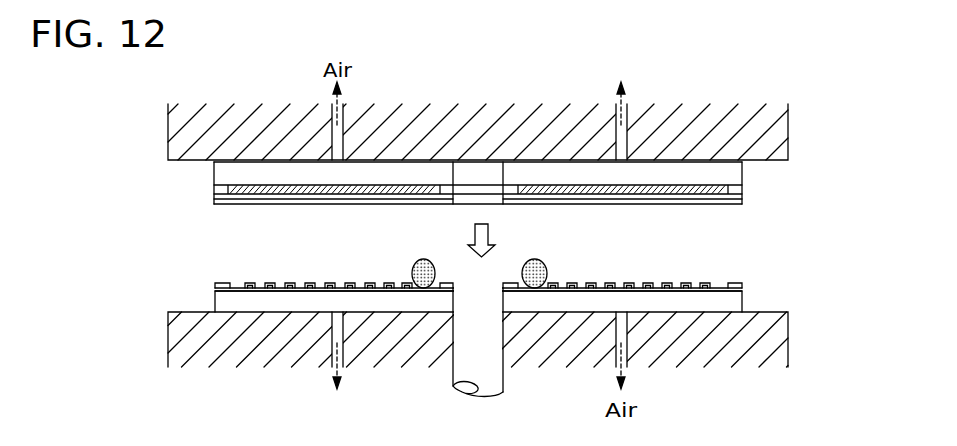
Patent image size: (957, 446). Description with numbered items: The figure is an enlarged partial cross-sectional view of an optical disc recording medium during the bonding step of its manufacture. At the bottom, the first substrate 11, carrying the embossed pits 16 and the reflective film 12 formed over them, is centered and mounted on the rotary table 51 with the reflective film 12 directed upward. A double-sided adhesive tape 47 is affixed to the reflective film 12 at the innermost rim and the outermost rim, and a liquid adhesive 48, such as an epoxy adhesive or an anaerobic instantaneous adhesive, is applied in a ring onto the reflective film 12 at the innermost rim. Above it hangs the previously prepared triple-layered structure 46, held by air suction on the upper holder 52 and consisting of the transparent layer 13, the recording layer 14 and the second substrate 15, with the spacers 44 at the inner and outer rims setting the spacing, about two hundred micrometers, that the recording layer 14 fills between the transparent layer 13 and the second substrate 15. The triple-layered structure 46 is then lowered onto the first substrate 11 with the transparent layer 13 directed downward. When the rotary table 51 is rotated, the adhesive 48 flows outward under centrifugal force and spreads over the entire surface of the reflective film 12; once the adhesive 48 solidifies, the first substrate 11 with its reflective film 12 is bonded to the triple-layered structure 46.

The first substrate 11 is at (737, 300).
The reflective film 12 is at (742, 290).
The transparent layer 13 is at (737, 198).
The recording layer 14 is at (632, 190).
The second substrate 15 is at (742, 170).
The embossed pits 16 is at (703, 283).
The spacers 44 is at (743, 188).
The triple-layered structure 46 is at (208, 161).
The double-sided adhesive tape 47 is at (220, 283).
The liquid adhesive 48 is at (535, 260).
The rotary table 51 is at (788, 348).
The upper suction stage 52 is at (790, 132).